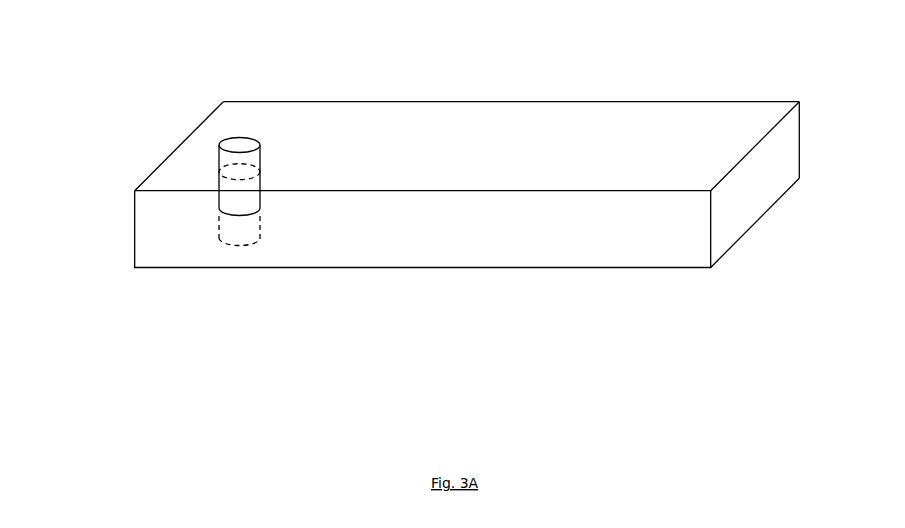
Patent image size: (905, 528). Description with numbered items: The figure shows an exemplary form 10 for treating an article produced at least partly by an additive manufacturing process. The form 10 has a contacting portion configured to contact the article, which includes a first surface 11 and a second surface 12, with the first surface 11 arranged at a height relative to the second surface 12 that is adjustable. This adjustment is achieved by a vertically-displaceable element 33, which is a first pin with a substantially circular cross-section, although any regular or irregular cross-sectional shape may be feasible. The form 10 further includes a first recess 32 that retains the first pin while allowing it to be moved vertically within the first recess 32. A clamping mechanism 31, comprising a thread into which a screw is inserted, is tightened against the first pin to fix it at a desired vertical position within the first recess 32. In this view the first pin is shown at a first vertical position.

The form 10 is at (130, 41).
The first surface 11 is at (242, 146).
The second surface 12 is at (592, 148).
The clamping mechanism 31 is at (239, 195).
The first recess 32 is at (243, 233).
The vertically-displaceable element 33 is at (222, 159).